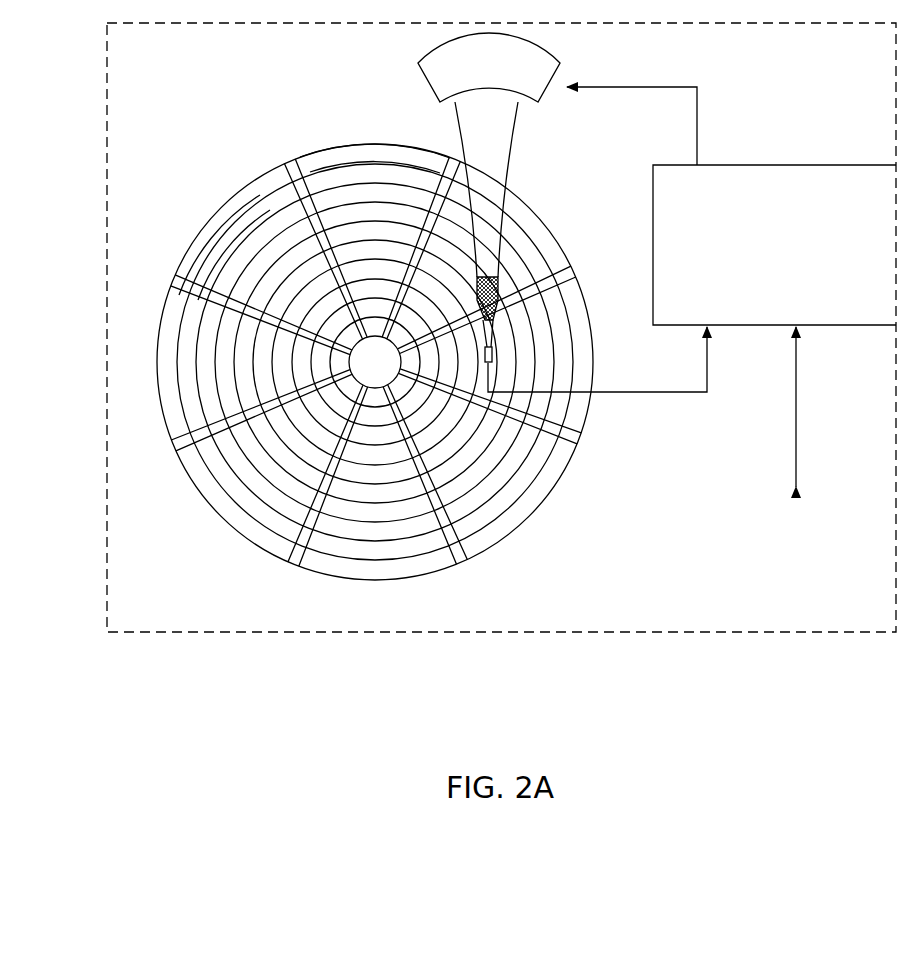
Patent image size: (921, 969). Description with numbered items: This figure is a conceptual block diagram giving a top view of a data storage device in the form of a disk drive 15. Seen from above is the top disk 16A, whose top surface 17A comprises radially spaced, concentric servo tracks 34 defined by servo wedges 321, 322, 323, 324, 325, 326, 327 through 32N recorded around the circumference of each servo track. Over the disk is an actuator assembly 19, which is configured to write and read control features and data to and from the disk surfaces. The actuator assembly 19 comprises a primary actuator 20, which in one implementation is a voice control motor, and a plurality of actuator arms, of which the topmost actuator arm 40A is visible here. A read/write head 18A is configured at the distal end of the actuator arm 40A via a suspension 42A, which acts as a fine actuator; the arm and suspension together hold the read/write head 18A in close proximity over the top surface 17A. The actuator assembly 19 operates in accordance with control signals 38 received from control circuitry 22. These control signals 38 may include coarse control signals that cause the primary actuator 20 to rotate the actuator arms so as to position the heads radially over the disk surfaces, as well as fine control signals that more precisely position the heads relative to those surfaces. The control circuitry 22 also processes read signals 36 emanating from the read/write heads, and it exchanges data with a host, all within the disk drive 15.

The disk drive 15 is at (823, 636).
The top disk 16A is at (241, 186).
The top surface 17A is at (220, 255).
The read/write head 18A is at (498, 364).
The actuator assembly 19 is at (536, 210).
The primary actuator 20 is at (548, 98).
The control circuitry 22 is at (774, 341).
The servo wedge 321 is at (290, 163).
The servo wedge 322 is at (179, 282).
The servo wedge 323 is at (180, 447).
The servo wedge 324 is at (296, 562).
The servo wedge 325 is at (462, 558).
The servo wedge 326 is at (578, 438).
The servo wedge 327 is at (578, 268).
The servo wedge 32N is at (460, 162).
The servo track 34 is at (382, 168).
The read signal 36 is at (693, 393).
The control signal 38 is at (699, 117).
The actuator arm 40A is at (506, 167).
The suspension 42A is at (504, 335).